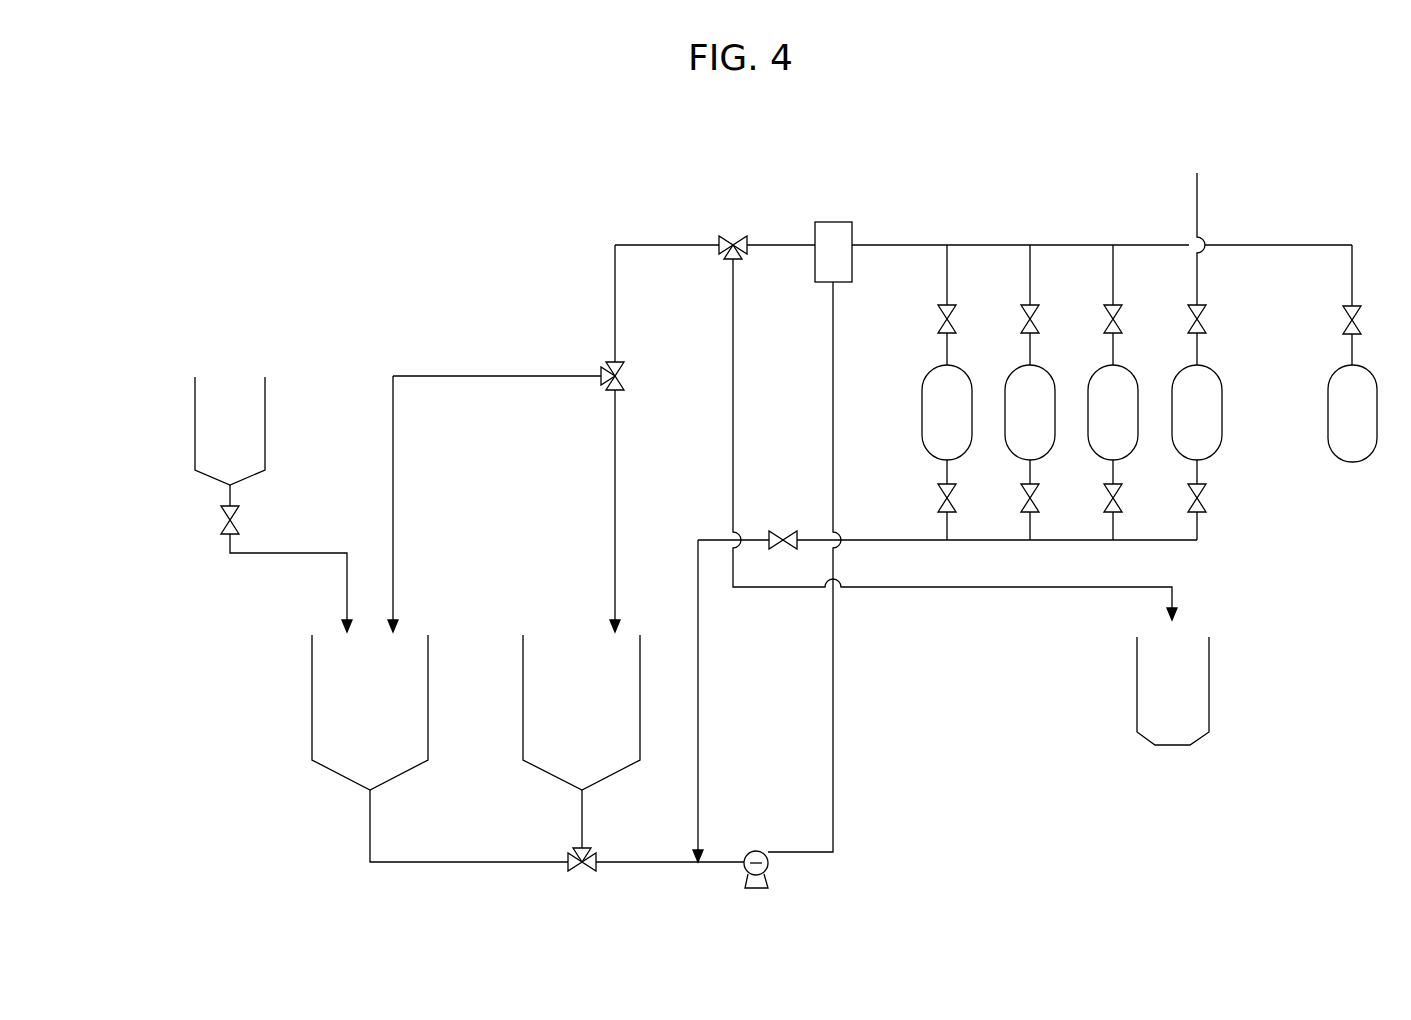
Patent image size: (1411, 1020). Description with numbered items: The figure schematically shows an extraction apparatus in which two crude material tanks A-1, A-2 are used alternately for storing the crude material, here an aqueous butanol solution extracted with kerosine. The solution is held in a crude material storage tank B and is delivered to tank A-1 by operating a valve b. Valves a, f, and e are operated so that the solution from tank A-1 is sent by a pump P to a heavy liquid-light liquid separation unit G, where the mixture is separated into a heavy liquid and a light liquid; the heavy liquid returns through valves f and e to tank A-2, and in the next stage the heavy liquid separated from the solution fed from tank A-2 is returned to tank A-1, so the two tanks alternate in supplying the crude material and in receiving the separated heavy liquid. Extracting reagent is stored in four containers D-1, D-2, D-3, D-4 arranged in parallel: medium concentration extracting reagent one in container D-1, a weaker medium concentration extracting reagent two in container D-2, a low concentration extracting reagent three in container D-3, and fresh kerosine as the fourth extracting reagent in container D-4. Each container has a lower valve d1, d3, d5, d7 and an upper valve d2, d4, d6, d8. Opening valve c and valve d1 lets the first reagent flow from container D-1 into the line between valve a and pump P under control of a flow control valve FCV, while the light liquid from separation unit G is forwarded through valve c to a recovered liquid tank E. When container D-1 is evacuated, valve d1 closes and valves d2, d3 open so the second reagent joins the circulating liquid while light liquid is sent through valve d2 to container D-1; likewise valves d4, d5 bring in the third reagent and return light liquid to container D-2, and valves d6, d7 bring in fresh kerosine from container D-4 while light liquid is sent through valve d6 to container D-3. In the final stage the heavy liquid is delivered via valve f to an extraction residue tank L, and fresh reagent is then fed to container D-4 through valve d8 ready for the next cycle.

The crude material tank A-1 is at (312, 672).
The crude material tank A-2 is at (523, 672).
The crude material storage tank B is at (265, 394).
The valve b is at (222, 516).
The valve e is at (624, 384).
The valve f is at (728, 236).
The valve a is at (582, 876).
The separation unit G is at (850, 222).
The pump P is at (745, 878).
The flow control valve FCV is at (784, 531).
The extraction residue tank L is at (1137, 668).
The valve c is at (1347, 308).
The recovered liquid tank E is at (1328, 389).
The container D-1 is at (922, 390).
The container D-2 is at (1005, 388).
The container D-3 is at (1088, 388).
The container D-4 is at (1172, 388).
The valve d1 is at (938, 505).
The valve d2 is at (940, 308).
The valve d3 is at (1022, 505).
The valve d4 is at (1023, 308).
The valve d5 is at (1107, 496).
The valve d6 is at (1106, 308).
The valve d7 is at (1190, 496).
The valve d8 is at (1190, 308).